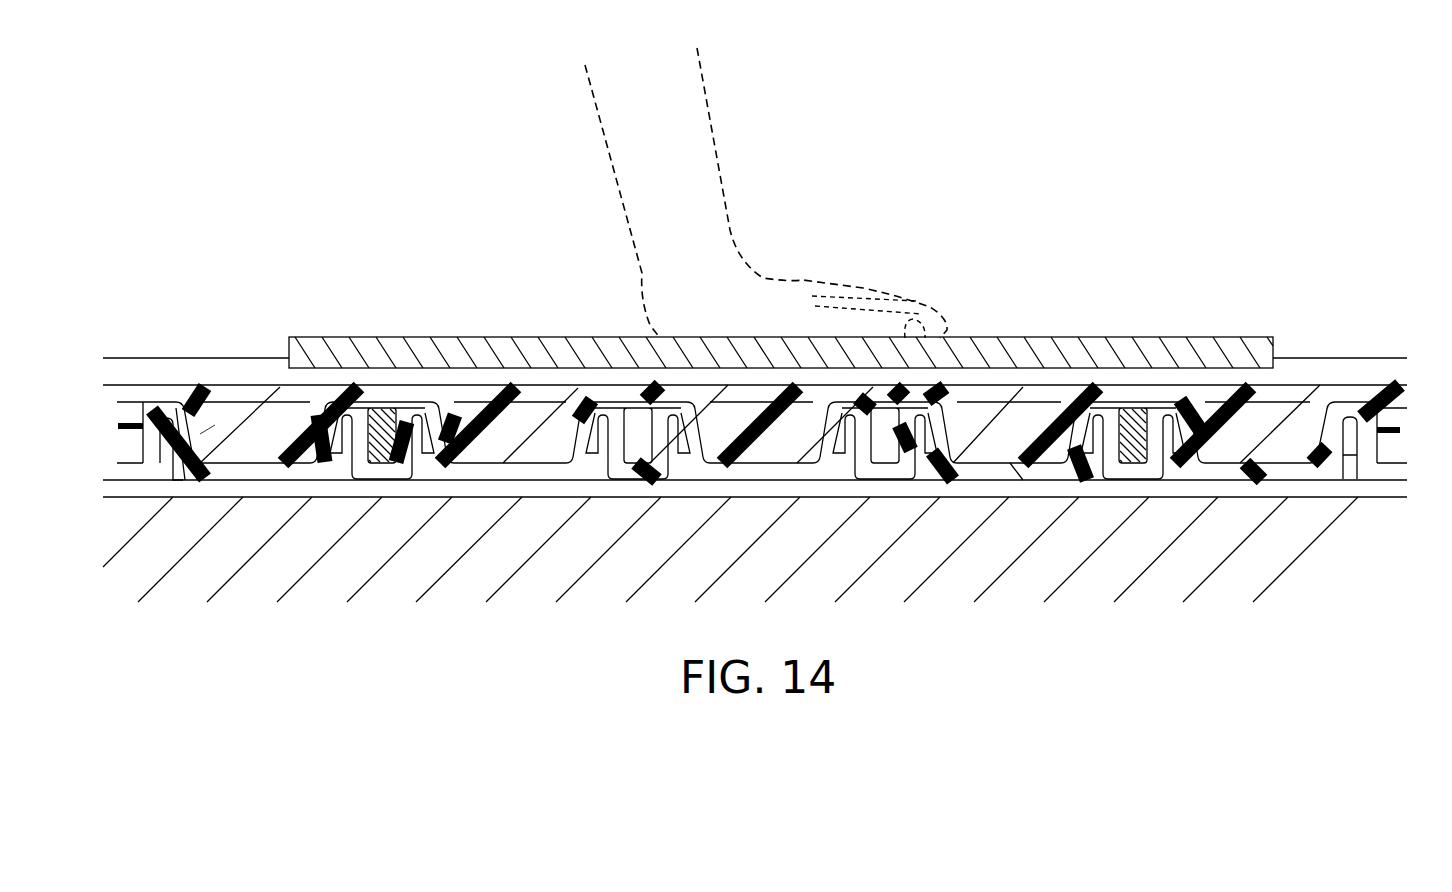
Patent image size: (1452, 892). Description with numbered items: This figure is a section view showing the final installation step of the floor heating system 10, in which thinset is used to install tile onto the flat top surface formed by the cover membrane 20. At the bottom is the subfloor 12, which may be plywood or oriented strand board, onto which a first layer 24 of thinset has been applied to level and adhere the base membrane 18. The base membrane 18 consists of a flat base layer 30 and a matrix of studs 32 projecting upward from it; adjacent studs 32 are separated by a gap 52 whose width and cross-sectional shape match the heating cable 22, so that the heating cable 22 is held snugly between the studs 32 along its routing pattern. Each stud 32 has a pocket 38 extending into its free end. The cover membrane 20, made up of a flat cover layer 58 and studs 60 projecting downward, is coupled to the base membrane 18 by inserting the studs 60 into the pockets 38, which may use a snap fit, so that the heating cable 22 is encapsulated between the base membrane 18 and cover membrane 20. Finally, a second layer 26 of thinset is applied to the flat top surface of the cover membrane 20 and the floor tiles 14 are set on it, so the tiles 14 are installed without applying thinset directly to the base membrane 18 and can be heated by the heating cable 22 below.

The floor heating system 10 is at (1372, 310).
The subfloor 12 is at (1047, 565).
The floor tiles 14 is at (1228, 352).
The base membrane 18 is at (183, 482).
The cover membrane 20 is at (193, 385).
The heating cable 22 is at (1140, 455).
The first layer of thinset 24 is at (1352, 485).
The second layer of thinset 26 is at (1288, 372).
The base layer 30 is at (383, 481).
The studs 32 is at (403, 405).
The pocket 38 is at (200, 434).
The gap 52 is at (640, 435).
The cover layer 58 is at (385, 410).
The studs 60 is at (250, 440).